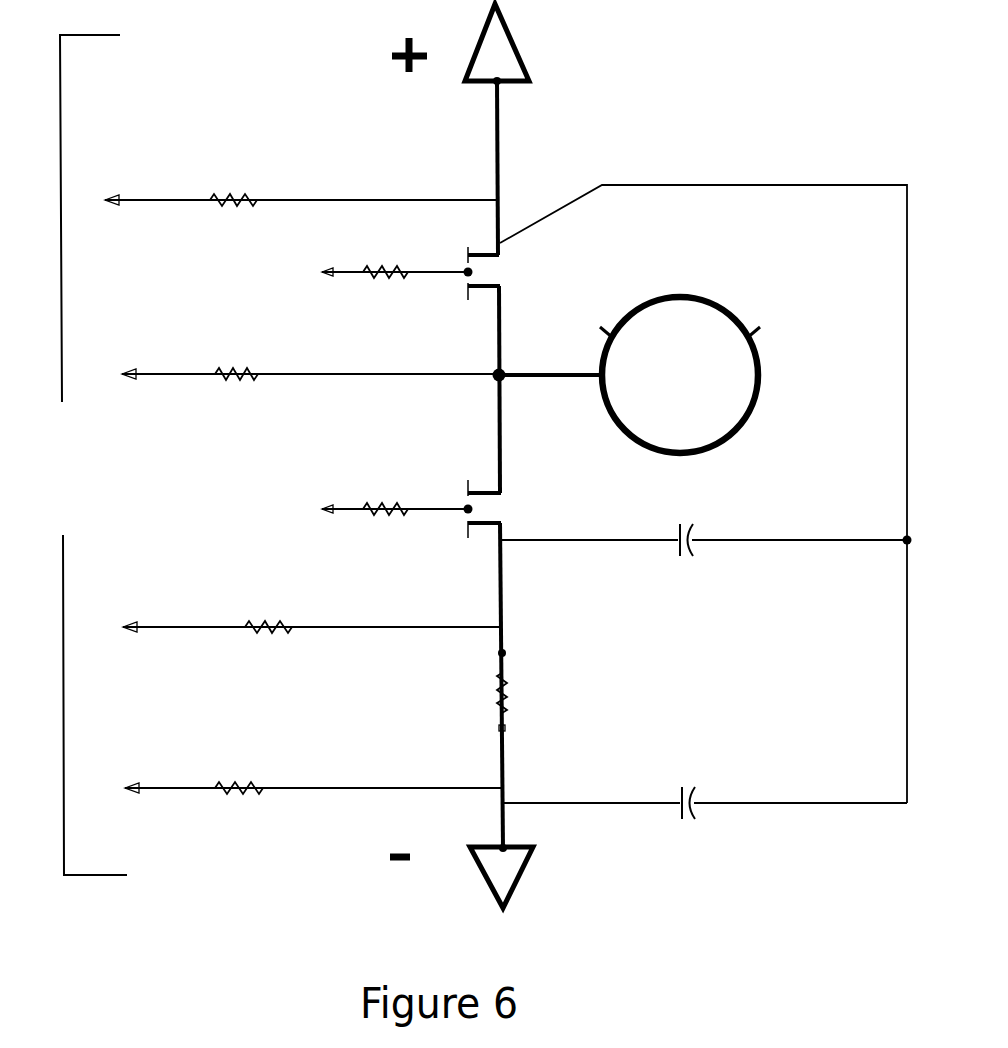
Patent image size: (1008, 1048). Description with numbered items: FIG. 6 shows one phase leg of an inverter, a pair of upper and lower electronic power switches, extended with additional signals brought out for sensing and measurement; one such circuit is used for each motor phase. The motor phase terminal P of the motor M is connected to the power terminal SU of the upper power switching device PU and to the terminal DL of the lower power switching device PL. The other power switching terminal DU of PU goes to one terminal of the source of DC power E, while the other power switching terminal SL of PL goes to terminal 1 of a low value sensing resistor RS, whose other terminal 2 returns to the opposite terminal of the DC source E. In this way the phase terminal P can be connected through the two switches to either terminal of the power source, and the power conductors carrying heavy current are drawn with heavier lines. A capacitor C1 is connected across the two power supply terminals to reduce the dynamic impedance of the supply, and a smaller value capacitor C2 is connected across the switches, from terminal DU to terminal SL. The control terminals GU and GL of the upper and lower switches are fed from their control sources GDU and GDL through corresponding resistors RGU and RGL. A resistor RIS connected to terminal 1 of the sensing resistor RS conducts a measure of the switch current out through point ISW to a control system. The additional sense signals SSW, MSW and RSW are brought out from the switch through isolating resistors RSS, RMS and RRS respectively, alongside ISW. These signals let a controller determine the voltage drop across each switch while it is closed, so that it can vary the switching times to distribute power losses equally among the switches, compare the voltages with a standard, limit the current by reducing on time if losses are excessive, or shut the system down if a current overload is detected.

The source of DC power E is at (85, 455).
The upper power switching device PU is at (505, 273).
The lower power switching device PL is at (505, 509).
The power switching terminal of upper switch DU is at (475, 229).
The control terminal of upper switch GU is at (443, 292).
The power terminal of upper switch SU is at (472, 324).
The terminal of lower switch DL is at (478, 467).
The control terminal of lower switch GL is at (448, 529).
The power switching terminal of lower switch SL is at (480, 564).
The motor phase terminal P is at (548, 354).
The motor M is at (680, 375).
The capacitor C1 is at (705, 833).
The capacitor C2 is at (706, 564).
The sensing resistor RS is at (533, 699).
The terminal of sensing resistor 1 is at (514, 652).
The terminal of sensing resistor 2 is at (513, 741).
The isolating resistor RSS is at (301, 216).
The isolating resistor RMS is at (310, 393).
The resistor RIS is at (312, 647).
The isolating resistor RRS is at (314, 806).
The resistor RGU is at (395, 298).
The resistor RGL is at (395, 529).
The sense signal SSW is at (116, 176).
The sense signal MSW is at (115, 353).
The sense signal point ISW is at (102, 604).
The sense signal RSW is at (117, 768).
The control source GDU is at (287, 274).
The control source GDL is at (287, 512).